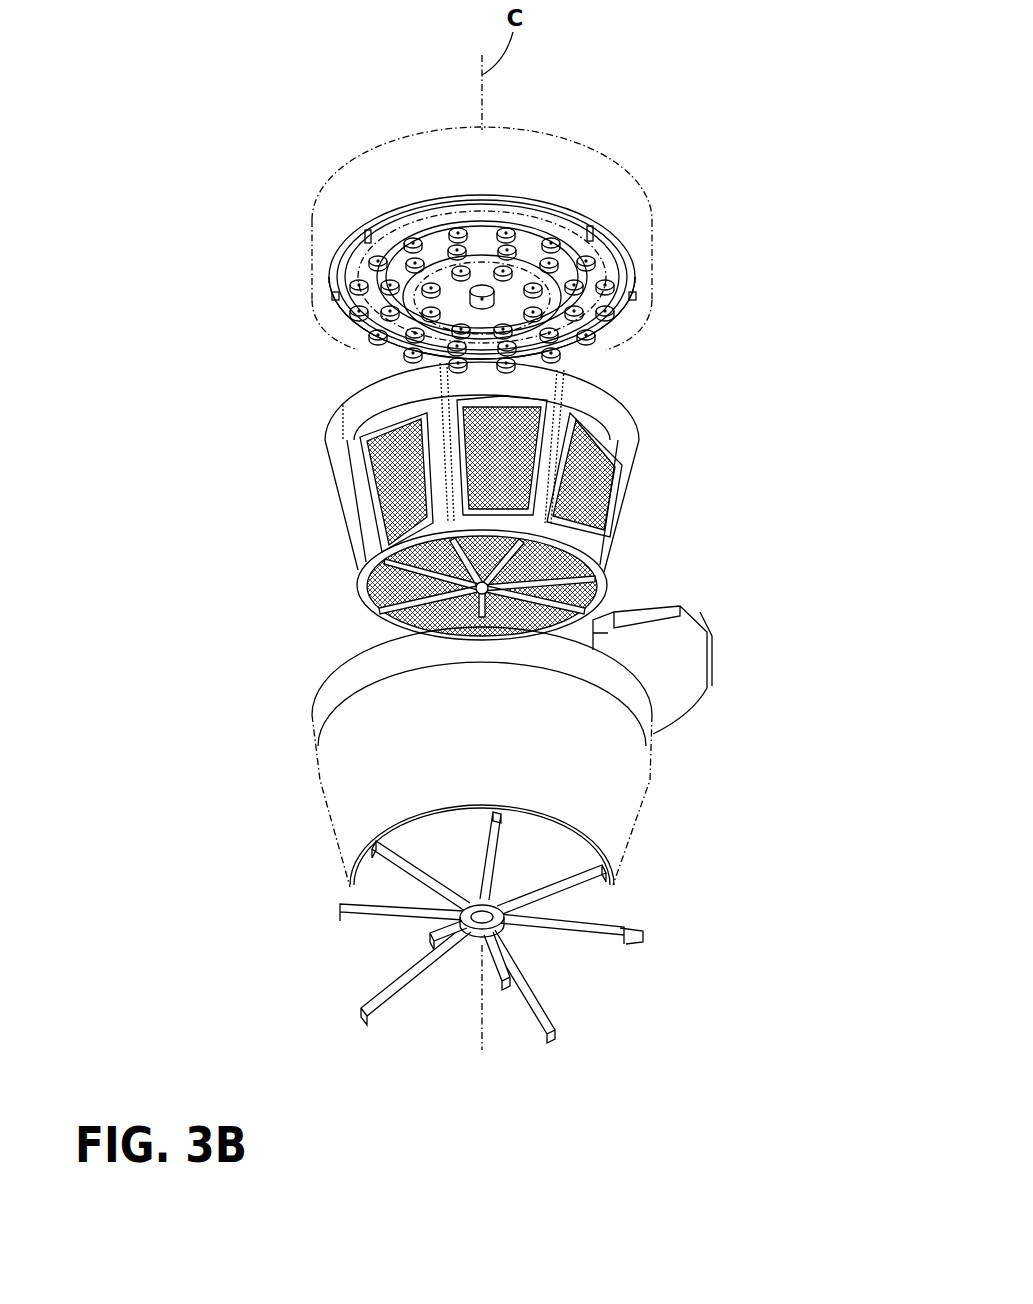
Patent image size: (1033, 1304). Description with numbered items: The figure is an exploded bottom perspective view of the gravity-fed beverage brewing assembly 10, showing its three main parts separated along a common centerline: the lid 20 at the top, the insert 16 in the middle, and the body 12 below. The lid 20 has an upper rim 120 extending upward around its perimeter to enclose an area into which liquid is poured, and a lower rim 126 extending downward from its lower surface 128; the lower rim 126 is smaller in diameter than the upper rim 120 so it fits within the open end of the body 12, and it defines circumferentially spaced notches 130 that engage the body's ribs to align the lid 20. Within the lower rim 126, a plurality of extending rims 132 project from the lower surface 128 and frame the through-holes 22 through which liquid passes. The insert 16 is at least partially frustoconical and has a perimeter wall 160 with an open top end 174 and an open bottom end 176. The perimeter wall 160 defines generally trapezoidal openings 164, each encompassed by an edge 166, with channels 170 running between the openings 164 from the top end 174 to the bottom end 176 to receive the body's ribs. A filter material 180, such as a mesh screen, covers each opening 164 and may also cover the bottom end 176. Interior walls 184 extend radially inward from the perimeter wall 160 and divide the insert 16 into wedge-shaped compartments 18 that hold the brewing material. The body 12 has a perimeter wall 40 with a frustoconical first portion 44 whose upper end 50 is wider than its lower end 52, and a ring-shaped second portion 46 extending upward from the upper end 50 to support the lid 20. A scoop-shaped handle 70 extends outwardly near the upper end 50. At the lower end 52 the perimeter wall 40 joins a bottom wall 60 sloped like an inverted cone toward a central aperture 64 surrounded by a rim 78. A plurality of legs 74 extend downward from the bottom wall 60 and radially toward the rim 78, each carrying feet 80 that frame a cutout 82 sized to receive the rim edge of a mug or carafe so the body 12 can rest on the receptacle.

The gravity-fed beverage brewing assembly 10 is at (600, 91).
The body 12 is at (500, 754).
The insert 16 is at (485, 482).
The compartments 18 is at (393, 472).
The lid 20 is at (489, 237).
The through-holes 22 is at (440, 240).
The perimeter wall 40 is at (353, 757).
The first portion 44 is at (360, 822).
The second portion 46 is at (343, 677).
The upper end 50 is at (342, 708).
The lower end 52 is at (370, 845).
The bottom wall 60 is at (565, 850).
The aperture 64 is at (467, 943).
The handle 70 is at (677, 663).
The legs 74 is at (510, 944).
The rim 78 is at (400, 990).
The feet 80 is at (645, 934).
The cutout 82 is at (594, 948).
The upper rim 120 is at (340, 192).
The lower rim 126 is at (563, 222).
The lower surface 128 is at (340, 247).
The notches 130 is at (606, 224).
The extending rims 132 is at (350, 313).
The perimeter wall 160 is at (363, 398).
The openings 164 is at (370, 527).
The edge 166 is at (363, 503).
The channels 170 is at (336, 410).
The top end 174 is at (613, 397).
The bottom end 176 is at (569, 551).
The filter material 180 is at (560, 548).
The interior walls 184 is at (598, 585).